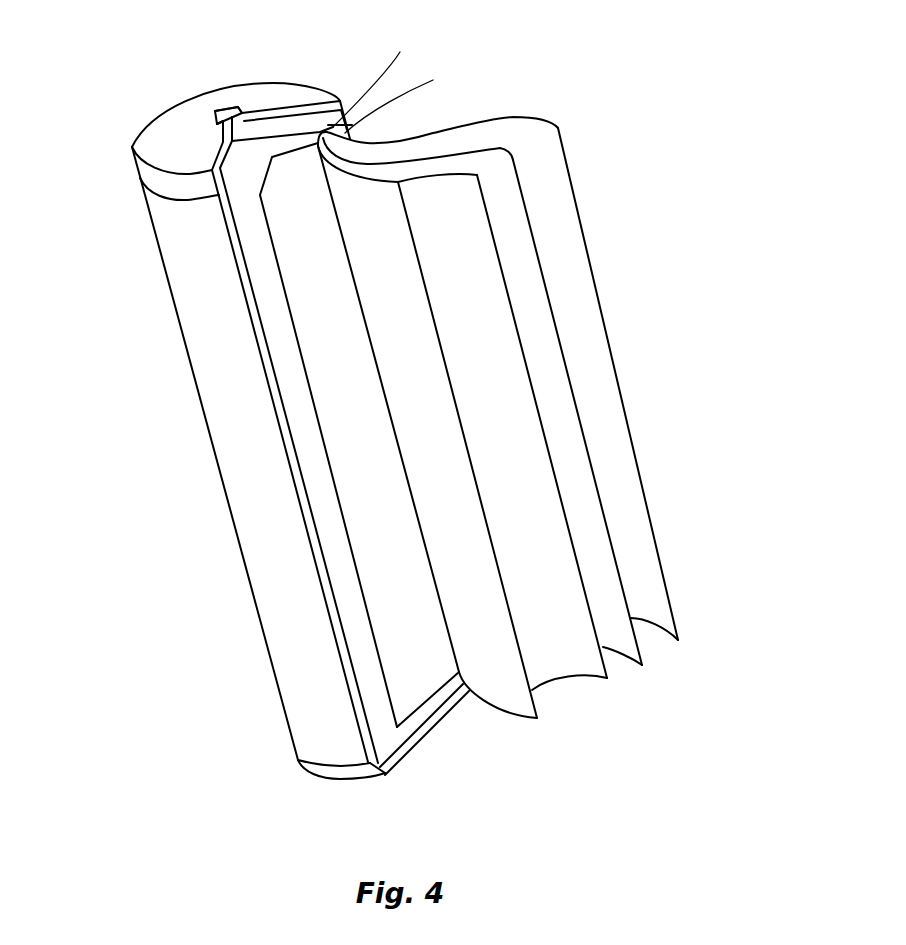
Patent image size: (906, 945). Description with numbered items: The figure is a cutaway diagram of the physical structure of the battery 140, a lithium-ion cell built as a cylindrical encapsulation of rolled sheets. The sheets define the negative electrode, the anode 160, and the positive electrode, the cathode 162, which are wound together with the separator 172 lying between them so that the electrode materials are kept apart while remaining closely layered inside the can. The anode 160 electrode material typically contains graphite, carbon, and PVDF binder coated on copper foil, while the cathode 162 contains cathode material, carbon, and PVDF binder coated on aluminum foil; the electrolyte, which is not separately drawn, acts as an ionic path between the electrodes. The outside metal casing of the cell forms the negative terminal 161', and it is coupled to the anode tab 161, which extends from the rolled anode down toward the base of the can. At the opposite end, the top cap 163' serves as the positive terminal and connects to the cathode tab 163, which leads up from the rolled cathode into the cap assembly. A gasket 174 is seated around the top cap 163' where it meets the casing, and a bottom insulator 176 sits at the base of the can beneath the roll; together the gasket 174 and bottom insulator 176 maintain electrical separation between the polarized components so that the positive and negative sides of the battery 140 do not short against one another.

The battery 140 is at (118, 233).
The negative terminal 161' is at (215, 423).
The top cap 163' is at (208, 81).
The gasket 174 is at (317, 108).
The cathode tab 163 is at (468, 98).
The cathode 162 is at (508, 712).
The separator 172 is at (530, 480).
The anode 160 is at (558, 325).
The anode tab 161 is at (427, 764).
The bottom insulator 176 is at (300, 762).